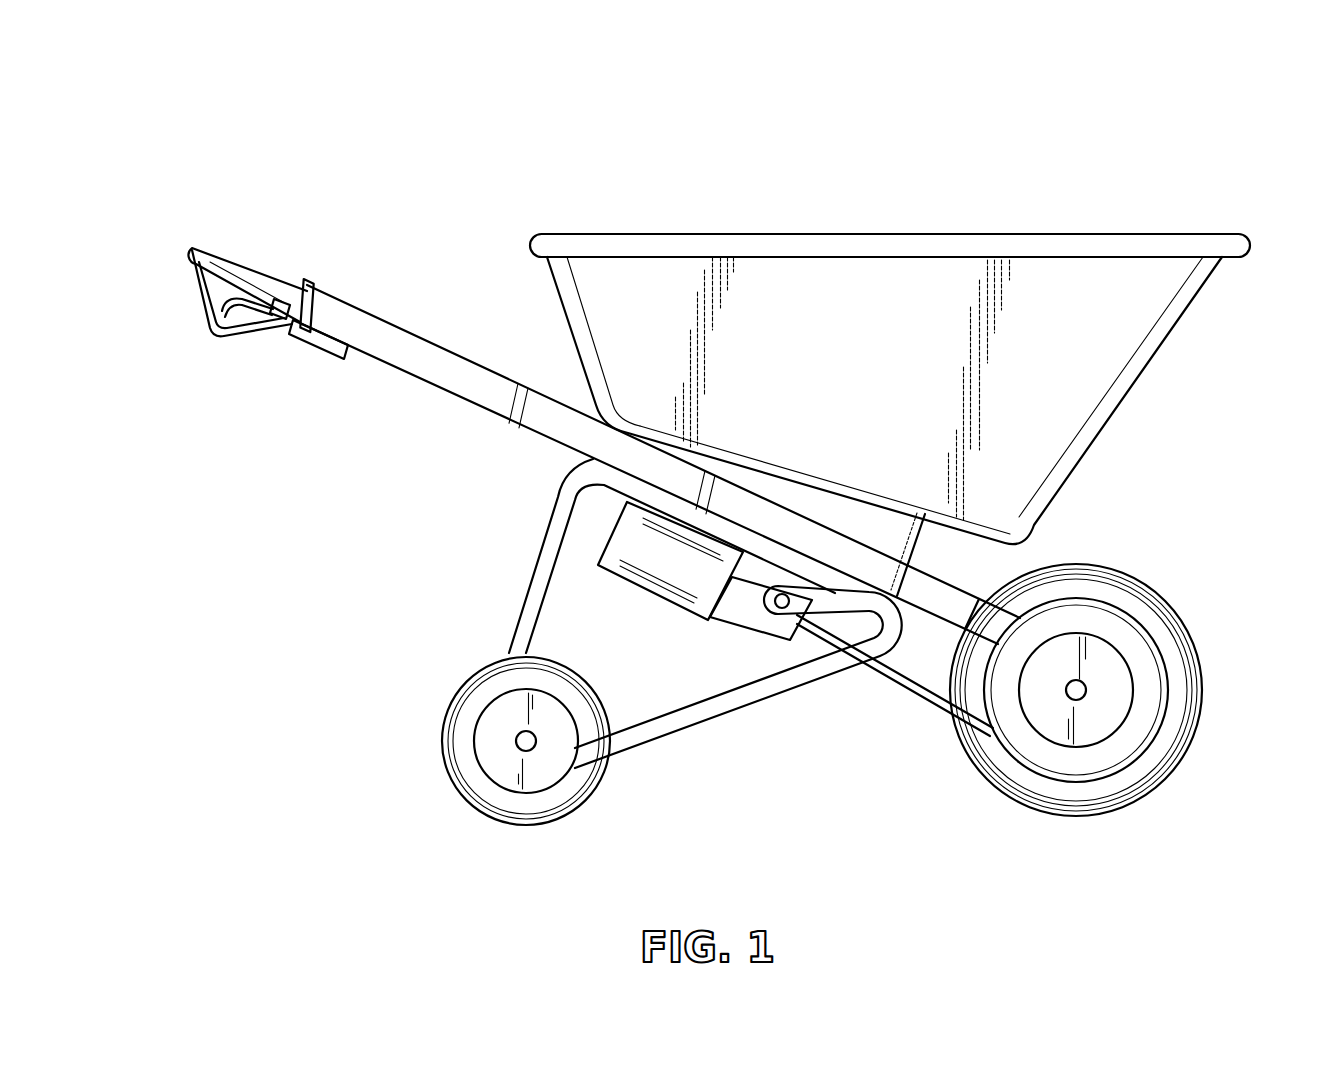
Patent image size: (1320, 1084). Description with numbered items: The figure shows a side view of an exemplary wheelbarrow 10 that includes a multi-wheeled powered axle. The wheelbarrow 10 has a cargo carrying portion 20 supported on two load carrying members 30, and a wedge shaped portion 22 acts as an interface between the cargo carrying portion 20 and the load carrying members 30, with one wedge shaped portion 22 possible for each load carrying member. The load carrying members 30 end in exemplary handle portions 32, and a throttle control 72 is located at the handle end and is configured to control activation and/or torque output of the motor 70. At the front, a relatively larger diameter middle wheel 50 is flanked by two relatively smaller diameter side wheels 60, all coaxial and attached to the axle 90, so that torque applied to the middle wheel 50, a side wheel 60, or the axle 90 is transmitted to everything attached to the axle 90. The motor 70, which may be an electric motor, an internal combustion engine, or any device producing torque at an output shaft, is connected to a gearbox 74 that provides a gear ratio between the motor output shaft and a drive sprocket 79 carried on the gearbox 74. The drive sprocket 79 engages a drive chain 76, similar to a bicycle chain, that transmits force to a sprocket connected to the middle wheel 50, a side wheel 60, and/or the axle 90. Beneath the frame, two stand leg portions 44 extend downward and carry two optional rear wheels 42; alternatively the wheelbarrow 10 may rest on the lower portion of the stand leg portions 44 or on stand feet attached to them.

The wheelbarrow 10 is at (1196, 172).
The cargo carrying portion 20 is at (1097, 348).
The wedge shaped portion 22 is at (882, 553).
The load carrying member 30 is at (476, 390).
The handle portion 32 is at (206, 247).
The throttle control 72 is at (273, 330).
The motor 70 is at (637, 548).
The gearbox 74 is at (746, 603).
The drive sprocket 79 is at (786, 609).
The drive chain 76 is at (924, 694).
The stand leg portion 44 is at (661, 728).
The rear wheel 42 is at (462, 733).
The larger diameter middle wheel 50 is at (1100, 803).
The smaller diameter side wheel 60 is at (1145, 650).
The axle 90 is at (1086, 690).